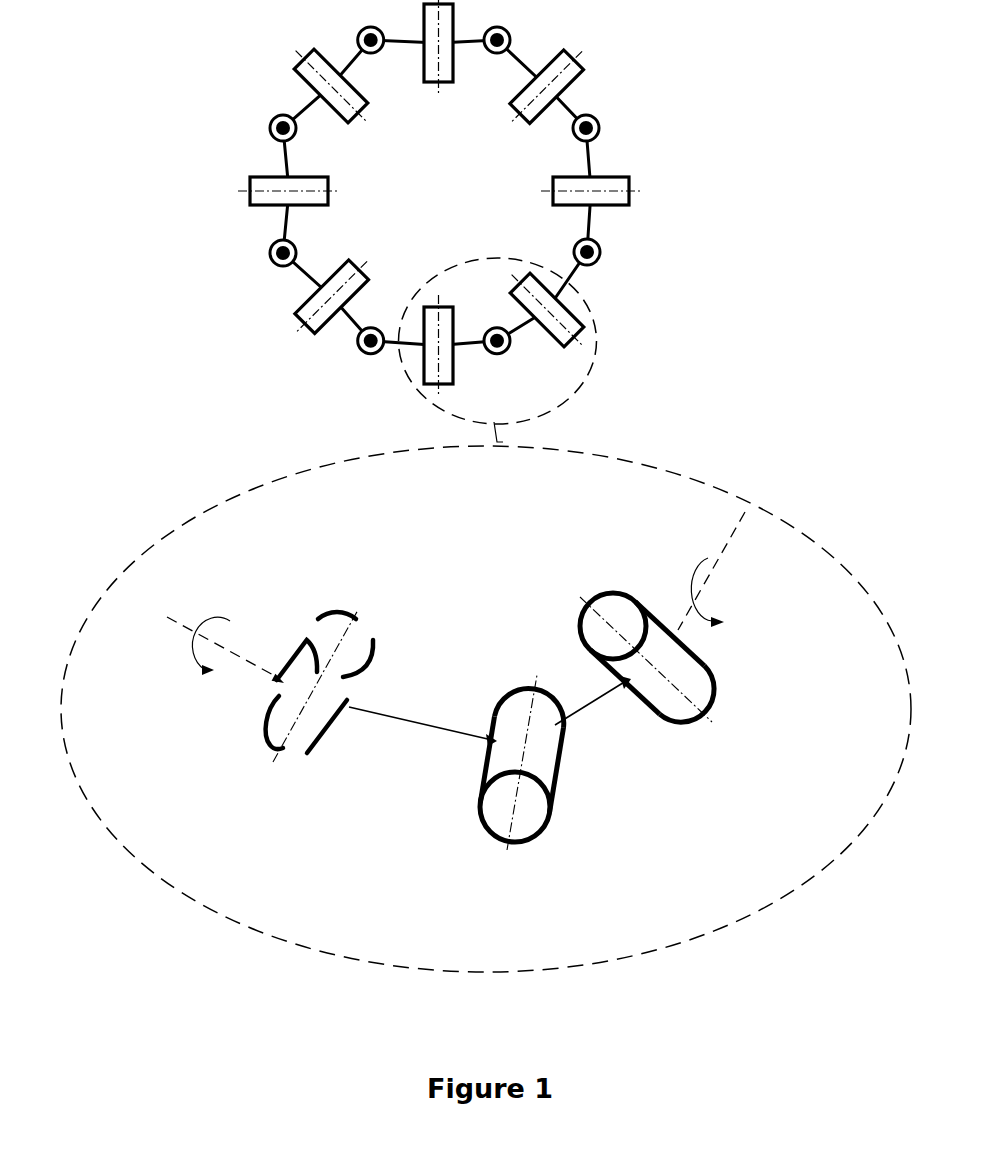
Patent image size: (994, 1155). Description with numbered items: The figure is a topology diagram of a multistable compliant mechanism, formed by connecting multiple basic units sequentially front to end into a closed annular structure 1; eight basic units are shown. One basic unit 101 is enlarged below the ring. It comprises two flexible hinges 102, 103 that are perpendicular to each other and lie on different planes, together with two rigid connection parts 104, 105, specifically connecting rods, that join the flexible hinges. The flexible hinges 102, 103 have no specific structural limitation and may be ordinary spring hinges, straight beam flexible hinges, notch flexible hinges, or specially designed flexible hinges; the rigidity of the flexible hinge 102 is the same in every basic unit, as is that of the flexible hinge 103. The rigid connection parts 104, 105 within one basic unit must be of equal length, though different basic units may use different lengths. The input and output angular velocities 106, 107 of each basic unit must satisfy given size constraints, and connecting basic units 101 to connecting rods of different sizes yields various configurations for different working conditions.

The closed annular structure 1 is at (590, 230).
The basic unit 101 is at (608, 347).
The flexible hinge 102 is at (640, 600).
The flexible hinge 103 is at (503, 697).
The rigid connection part 104 is at (583, 709).
The rigid connection part 105 is at (418, 723).
The input angular velocity 106 is at (195, 662).
The output angular velocity 107 is at (702, 588).